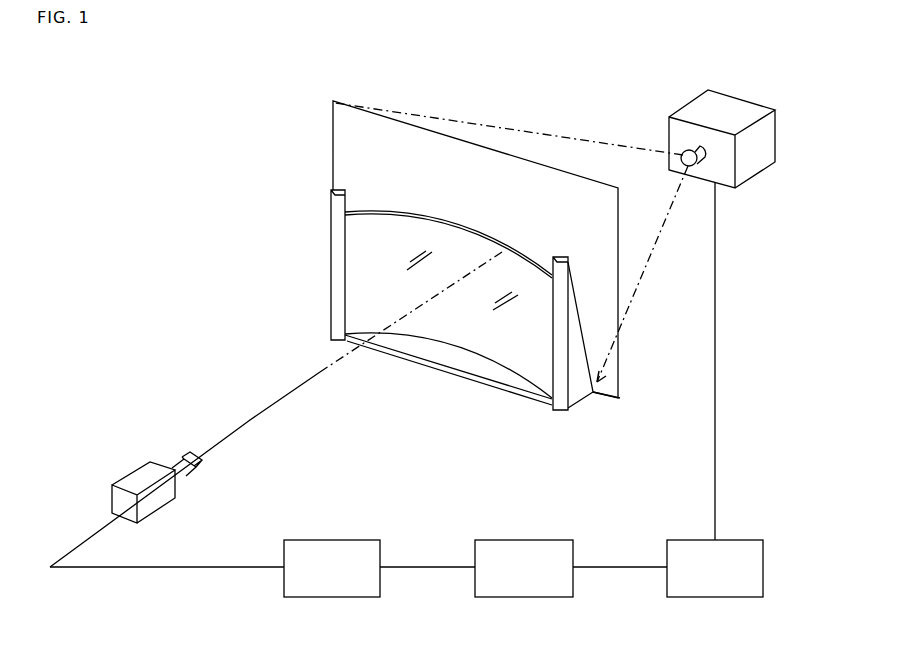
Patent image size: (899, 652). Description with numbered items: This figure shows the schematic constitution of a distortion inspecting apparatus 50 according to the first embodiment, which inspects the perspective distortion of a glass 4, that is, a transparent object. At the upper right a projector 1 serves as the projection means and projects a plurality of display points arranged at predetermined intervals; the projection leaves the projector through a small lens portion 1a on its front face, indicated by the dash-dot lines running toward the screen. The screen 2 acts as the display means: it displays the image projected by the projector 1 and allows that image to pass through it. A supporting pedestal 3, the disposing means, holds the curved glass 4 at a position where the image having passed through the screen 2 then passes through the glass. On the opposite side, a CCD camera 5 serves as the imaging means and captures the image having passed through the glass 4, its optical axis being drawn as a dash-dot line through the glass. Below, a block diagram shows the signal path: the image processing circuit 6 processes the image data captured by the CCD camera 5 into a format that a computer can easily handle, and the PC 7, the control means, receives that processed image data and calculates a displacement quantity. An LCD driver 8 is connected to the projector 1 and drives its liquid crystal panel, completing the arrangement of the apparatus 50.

The projector 1 is at (755, 107).
The projector lens 1a is at (678, 168).
The screen 2 is at (487, 152).
The supporting pedestal 3 is at (597, 424).
The glass 4 is at (505, 355).
The CCD camera 5 is at (142, 472).
The image processing circuit 6 is at (366, 540).
The PC 7 is at (558, 540).
The LCD driver 8 is at (748, 540).
The distortion inspecting apparatus 50 is at (216, 188).